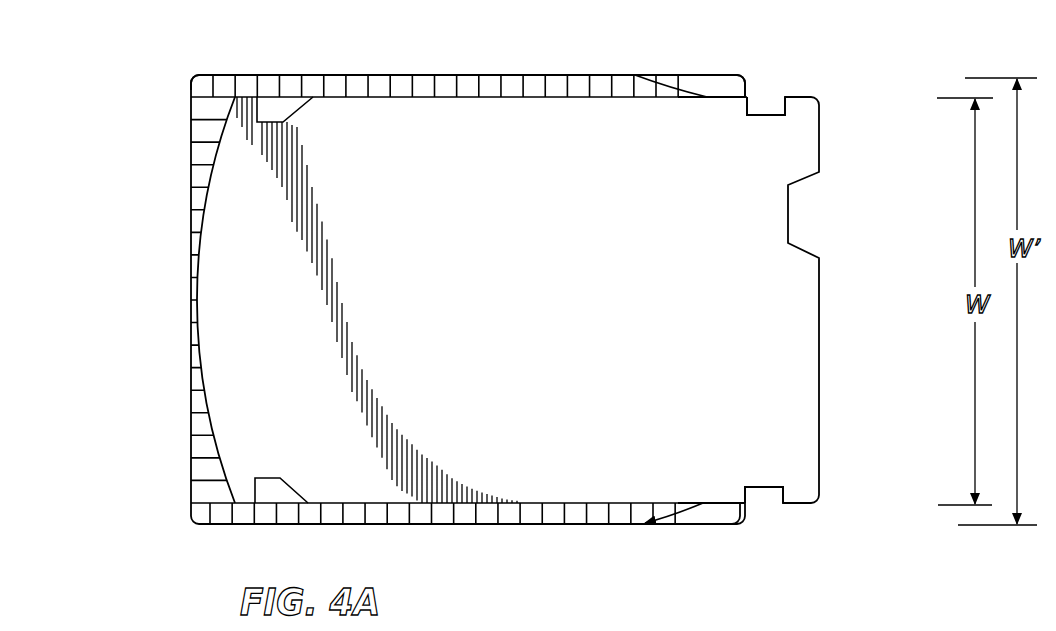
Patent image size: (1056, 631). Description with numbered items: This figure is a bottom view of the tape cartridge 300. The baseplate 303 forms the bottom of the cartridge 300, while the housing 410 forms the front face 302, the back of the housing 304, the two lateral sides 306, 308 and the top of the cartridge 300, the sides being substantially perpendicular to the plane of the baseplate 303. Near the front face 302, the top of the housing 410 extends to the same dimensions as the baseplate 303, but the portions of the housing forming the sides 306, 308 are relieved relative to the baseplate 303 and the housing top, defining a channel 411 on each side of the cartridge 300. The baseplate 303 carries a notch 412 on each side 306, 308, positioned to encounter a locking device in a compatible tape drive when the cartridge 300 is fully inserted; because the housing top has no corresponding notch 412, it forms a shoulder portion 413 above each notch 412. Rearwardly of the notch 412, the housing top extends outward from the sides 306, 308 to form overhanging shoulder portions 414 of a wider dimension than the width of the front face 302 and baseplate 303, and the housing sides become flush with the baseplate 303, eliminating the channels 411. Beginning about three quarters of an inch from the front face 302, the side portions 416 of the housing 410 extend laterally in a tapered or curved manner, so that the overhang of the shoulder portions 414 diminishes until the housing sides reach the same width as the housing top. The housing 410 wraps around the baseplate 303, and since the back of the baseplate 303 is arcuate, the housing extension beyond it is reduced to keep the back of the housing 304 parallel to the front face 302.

The tape cartridge 300 is at (550, 556).
The front face 302 is at (839, 462).
The baseplate 303 is at (232, 448).
The back of the housing 304 is at (178, 412).
The side 306 is at (487, 534).
The side 308 is at (374, 70).
The housing 410 is at (201, 80).
The channel 411 is at (818, 88).
The notch 412 is at (763, 107).
The shoulder portion 413 is at (778, 100).
The overhanging shoulder portion 414 is at (727, 75).
The side portion 416 is at (665, 75).